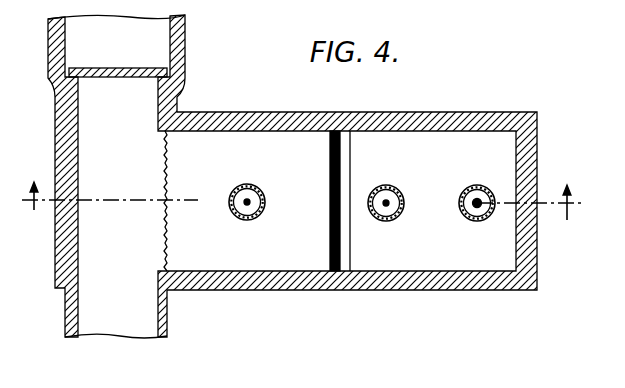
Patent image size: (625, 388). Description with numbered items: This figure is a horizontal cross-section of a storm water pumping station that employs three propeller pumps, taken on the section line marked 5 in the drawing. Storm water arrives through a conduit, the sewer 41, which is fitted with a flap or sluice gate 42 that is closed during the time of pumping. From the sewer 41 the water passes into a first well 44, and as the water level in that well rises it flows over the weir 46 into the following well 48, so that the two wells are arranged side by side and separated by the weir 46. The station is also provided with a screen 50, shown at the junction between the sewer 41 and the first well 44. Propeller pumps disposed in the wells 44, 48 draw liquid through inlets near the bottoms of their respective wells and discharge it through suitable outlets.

The pipe 41 is at (107, 177).
The cap plate 42 is at (118, 68).
The left compartment of housing 44 is at (347, 176).
The partition 46 is at (332, 163).
The right compartment of housing 48 is at (431, 225).
The knurled surface 50 is at (165, 162).
The section line 5- 5 is at (307, 201).